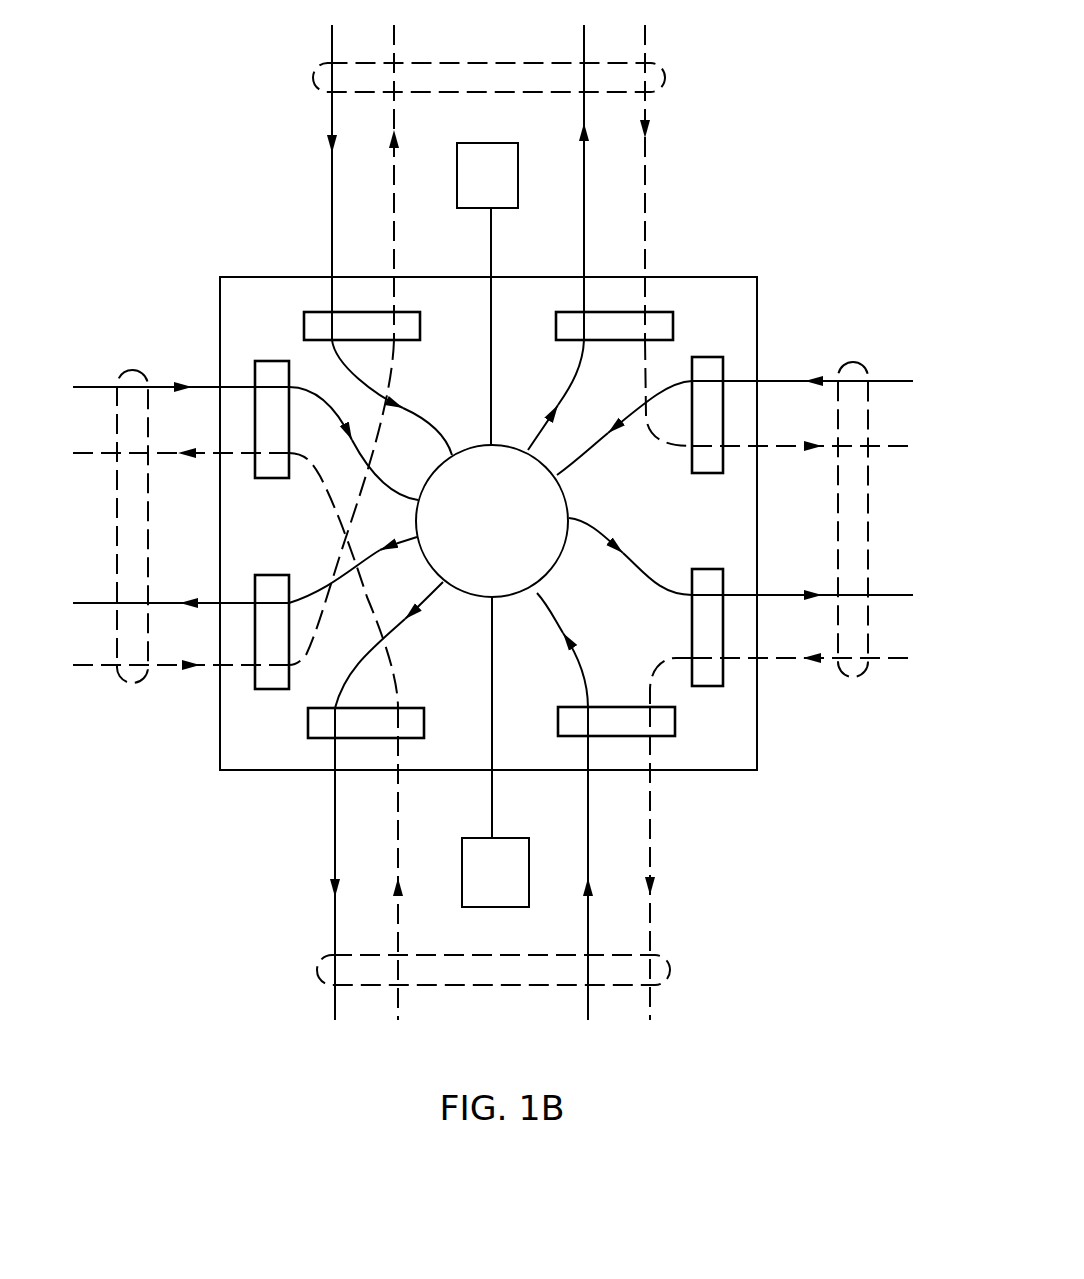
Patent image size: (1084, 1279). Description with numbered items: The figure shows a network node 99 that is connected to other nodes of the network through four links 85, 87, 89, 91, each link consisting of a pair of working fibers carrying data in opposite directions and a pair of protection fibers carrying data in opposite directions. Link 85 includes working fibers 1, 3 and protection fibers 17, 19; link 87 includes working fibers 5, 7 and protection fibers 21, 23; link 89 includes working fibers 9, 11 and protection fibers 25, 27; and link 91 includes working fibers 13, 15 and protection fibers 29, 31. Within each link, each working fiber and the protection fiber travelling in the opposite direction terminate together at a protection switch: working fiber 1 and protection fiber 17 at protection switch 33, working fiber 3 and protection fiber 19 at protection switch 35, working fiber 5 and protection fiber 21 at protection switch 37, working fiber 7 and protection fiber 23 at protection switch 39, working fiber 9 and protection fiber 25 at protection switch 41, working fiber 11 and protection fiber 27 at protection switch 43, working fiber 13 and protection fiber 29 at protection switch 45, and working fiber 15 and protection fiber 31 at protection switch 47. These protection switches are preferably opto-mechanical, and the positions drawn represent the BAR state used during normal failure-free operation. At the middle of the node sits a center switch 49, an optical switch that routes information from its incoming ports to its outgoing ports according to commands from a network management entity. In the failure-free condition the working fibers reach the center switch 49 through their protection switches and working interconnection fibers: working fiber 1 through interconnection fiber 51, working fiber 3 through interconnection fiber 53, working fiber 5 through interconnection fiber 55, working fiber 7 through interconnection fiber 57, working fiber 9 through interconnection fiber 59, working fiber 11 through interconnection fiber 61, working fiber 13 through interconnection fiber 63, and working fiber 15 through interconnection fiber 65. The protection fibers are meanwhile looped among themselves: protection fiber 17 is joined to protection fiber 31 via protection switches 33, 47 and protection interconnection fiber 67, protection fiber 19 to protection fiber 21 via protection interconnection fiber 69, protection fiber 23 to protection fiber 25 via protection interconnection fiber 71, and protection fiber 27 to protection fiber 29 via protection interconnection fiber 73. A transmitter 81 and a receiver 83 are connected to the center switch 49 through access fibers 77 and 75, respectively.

The working fiber 1 is at (205, 386).
The working fiber 3 is at (212, 600).
The working fiber 5 is at (331, 126).
The working fiber 7 is at (583, 121).
The working fiber 9 is at (775, 380).
The working fiber 11 is at (775, 592).
The working fiber 13 is at (587, 918).
The working fiber 15 is at (334, 918).
The protection fiber 17 is at (205, 456).
The protection fiber 19 is at (205, 662).
The protection fiber 21 is at (397, 122).
The protection fiber 23 is at (648, 103).
The protection fiber 25 is at (787, 450).
The protection fiber 27 is at (785, 655).
The protection fiber 29 is at (652, 910).
The protection fiber 31 is at (400, 920).
The protection switch 33 is at (255, 370).
The protection switch 35 is at (255, 678).
The protection switch 37 is at (318, 312).
The protection switch 39 is at (658, 312).
The protection switch 41 is at (708, 357).
The protection switch 43 is at (725, 676).
The protection switch 45 is at (668, 738).
The protection switch 47 is at (318, 740).
The center switch 49 is at (477, 536).
The working interconnection fiber 51 is at (388, 486).
The interconnection fiber 53 is at (393, 548).
The interconnection fiber 55 is at (430, 426).
The interconnection fiber 57 is at (572, 383).
The interconnection fiber 59 is at (585, 466).
The interconnection fiber 61 is at (638, 573).
The interconnection fiber 63 is at (568, 659).
The interconnection fiber 65 is at (425, 603).
The protection interconnection fiber 67 is at (370, 599).
The protection interconnection fiber 69 is at (393, 368).
The protection interconnection fiber 71 is at (645, 379).
The protection interconnection fiber 73 is at (660, 666).
The access fiber 75 is at (492, 246).
The access fiber 77 is at (492, 809).
The transmitter 81 is at (519, 838).
The receiver 83 is at (473, 209).
The link 85 is at (125, 372).
The link 87 is at (666, 70).
The link 89 is at (862, 362).
The link 91 is at (670, 975).
The network node 99 is at (757, 748).